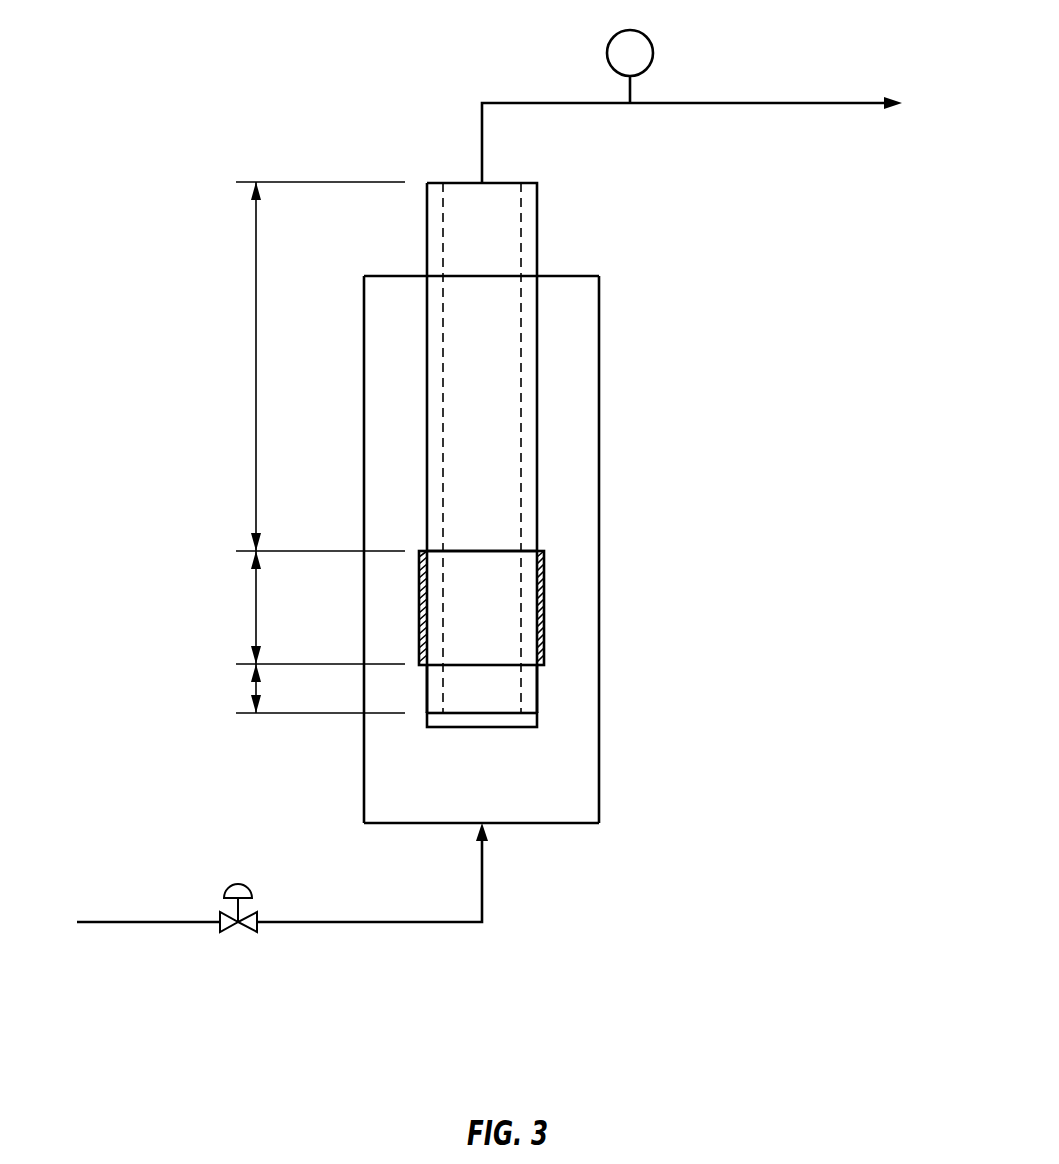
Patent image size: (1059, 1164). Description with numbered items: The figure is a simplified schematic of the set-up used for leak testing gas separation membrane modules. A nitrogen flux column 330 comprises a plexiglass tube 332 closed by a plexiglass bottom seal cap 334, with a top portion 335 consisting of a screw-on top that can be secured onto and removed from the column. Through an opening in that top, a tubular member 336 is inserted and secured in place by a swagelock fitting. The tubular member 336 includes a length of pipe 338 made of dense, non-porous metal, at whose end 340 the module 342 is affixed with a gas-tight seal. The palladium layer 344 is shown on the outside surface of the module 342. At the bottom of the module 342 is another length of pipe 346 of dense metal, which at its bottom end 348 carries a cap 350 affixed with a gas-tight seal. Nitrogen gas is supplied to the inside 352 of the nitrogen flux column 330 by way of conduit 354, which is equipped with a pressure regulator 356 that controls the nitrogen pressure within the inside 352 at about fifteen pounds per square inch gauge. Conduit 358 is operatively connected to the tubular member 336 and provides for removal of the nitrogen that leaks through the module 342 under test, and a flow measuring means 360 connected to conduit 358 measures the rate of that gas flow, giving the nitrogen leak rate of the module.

The nitrogen flux column 330 is at (675, 279).
The plexiglass tube 332 is at (599, 437).
The plexiglass bottom seal cap 334 is at (573, 823).
The top portion 335 is at (557, 276).
The tubular member 336 is at (537, 208).
The length of pipe 338 is at (256, 365).
The end 340 is at (507, 551).
The module 342 is at (256, 608).
The palladium layer 344 is at (544, 625).
The length of pipe 346 is at (256, 690).
The bottom end 348 is at (537, 692).
The cap 350 is at (497, 722).
The inside 352 is at (452, 799).
The conduit 354 is at (110, 922).
The pressure regulator 356 is at (222, 930).
The conduit 358 is at (482, 103).
The flow measuring means 360 is at (607, 53).